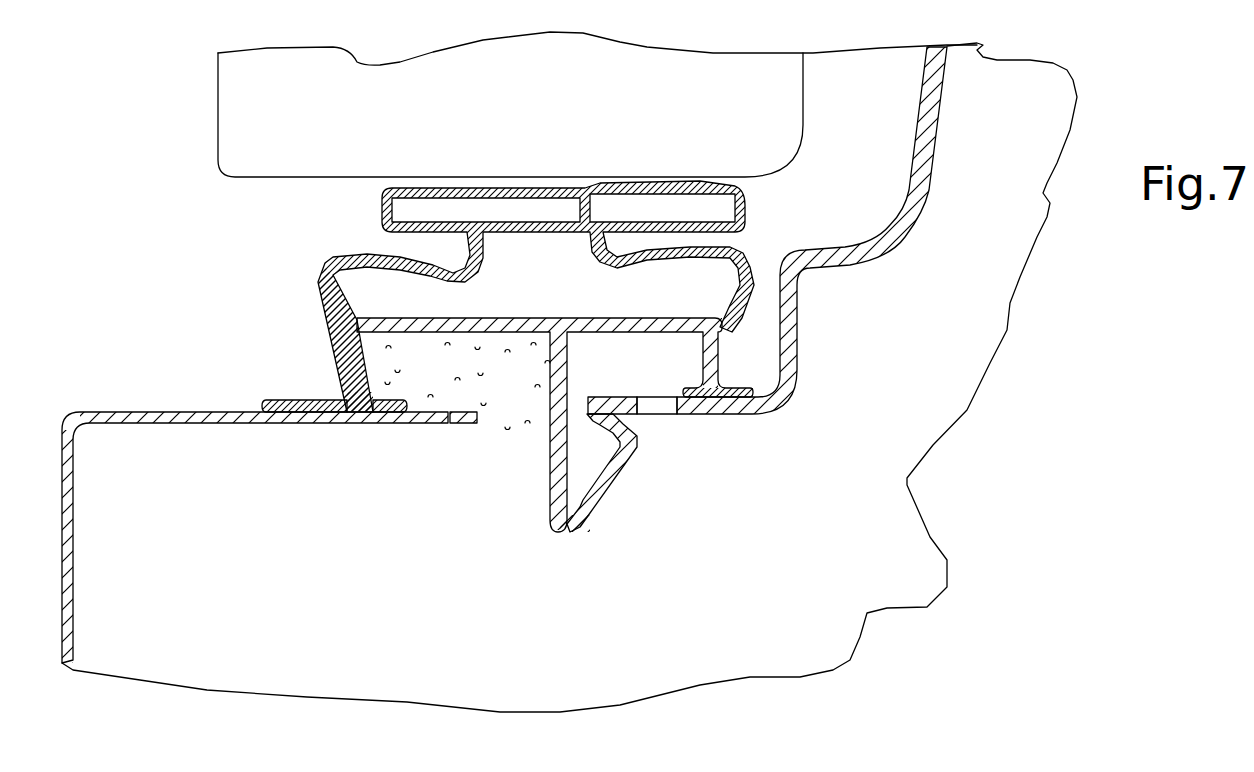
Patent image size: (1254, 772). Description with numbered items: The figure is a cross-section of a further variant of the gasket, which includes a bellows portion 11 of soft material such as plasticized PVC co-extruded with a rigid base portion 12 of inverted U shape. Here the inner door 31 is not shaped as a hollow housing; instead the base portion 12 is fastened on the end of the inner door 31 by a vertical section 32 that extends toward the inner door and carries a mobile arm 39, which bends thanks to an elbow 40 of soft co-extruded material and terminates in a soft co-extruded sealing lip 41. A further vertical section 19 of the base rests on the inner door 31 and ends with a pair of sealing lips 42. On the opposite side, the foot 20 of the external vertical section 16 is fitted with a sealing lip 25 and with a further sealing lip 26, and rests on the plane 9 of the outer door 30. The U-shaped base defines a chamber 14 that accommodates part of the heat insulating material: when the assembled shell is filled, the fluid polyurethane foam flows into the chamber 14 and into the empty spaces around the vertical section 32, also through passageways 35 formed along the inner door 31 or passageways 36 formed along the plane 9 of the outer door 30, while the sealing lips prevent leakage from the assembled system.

The plane 9 is at (220, 423).
The bellows portion 11 is at (330, 262).
The base portion 12 is at (553, 318).
The chamber 14 is at (519, 410).
The external vertical section 16 is at (363, 353).
The vertical section 19 is at (717, 350).
The foot 20 is at (360, 417).
The sealing lip 25 is at (277, 400).
The further sealing lip 26 is at (400, 407).
The outer door 30 is at (63, 587).
The inner door 31 is at (797, 287).
The vertical section 32 is at (553, 437).
The passageways 35 is at (660, 414).
The passageways 36 is at (433, 423).
The mobile arm 39 is at (607, 480).
The elbow 40 is at (587, 523).
The soft sealing lip 41 is at (610, 417).
The sealing lips 42 is at (710, 400).